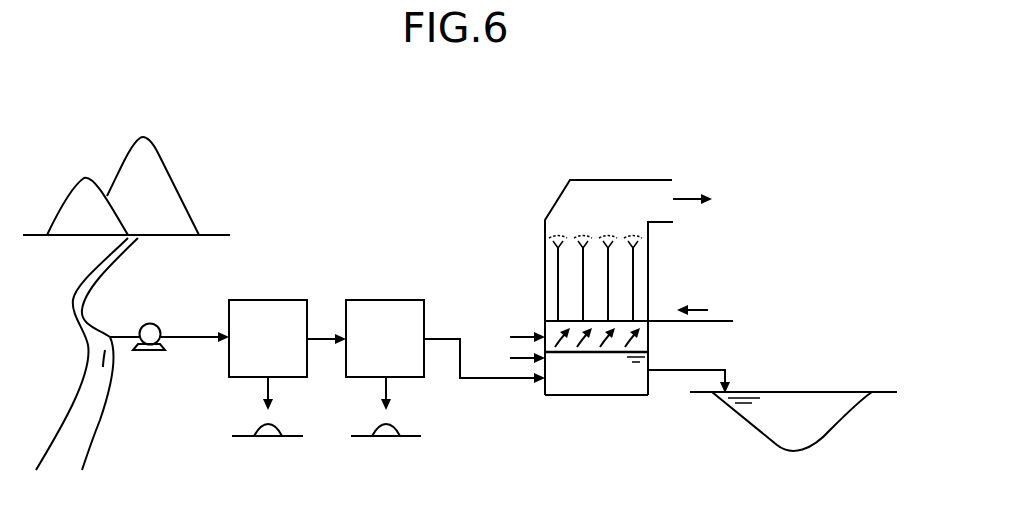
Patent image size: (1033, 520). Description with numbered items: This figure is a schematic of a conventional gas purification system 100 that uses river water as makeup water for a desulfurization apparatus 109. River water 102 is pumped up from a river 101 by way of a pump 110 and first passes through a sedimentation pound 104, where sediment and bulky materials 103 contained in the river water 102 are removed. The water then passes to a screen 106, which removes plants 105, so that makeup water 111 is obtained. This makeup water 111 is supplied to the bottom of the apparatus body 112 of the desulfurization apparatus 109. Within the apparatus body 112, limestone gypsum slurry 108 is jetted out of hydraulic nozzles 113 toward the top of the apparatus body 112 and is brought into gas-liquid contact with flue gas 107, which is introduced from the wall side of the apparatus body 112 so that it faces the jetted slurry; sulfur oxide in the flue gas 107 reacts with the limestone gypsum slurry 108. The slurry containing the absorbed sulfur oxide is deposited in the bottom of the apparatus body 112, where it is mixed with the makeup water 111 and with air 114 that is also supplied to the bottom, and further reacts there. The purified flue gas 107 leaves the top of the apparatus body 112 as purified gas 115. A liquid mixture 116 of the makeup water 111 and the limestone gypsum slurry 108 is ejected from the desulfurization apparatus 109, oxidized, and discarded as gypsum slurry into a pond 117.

The gas purification system 100 is at (377, 143).
The river 101 is at (80, 397).
The river water 102 is at (180, 333).
The sediment and bulky materials 103 is at (256, 432).
The sedimentation pound 104 is at (279, 300).
The plants 105 is at (370, 432).
The screen 106 is at (382, 300).
The flue gas 107 is at (536, 336).
The limestone gypsum slurry 108 is at (710, 309).
The desulfurization apparatus 109 is at (622, 180).
The pump 110 is at (152, 353).
The makeup water 111 is at (493, 381).
The apparatus body 112 is at (545, 236).
The hydraulic nozzles 113 is at (636, 257).
The air 114 is at (532, 358).
The purified gas 115 is at (686, 198).
The liquid mixture 116 is at (682, 370).
The pond 117 is at (752, 433).